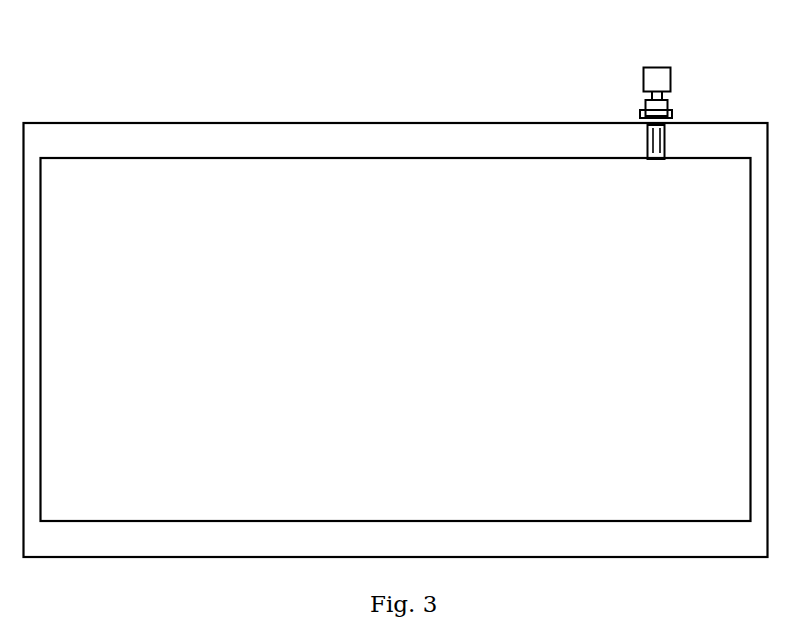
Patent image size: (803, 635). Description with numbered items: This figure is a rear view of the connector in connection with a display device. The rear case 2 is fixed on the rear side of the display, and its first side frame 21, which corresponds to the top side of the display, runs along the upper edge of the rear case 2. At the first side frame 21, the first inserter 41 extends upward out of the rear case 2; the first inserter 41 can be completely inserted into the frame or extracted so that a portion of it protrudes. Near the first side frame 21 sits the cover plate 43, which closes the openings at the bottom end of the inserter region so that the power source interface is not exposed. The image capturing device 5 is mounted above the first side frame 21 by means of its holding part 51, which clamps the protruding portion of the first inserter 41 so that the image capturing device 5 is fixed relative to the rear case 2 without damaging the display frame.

The rear case 2 is at (73, 190).
The first side frame 21 is at (395, 135).
The first inserter 41 is at (647, 152).
The cover plate 43 is at (675, 121).
The image capturing device 5 is at (643, 81).
The holding part 51 is at (664, 98).